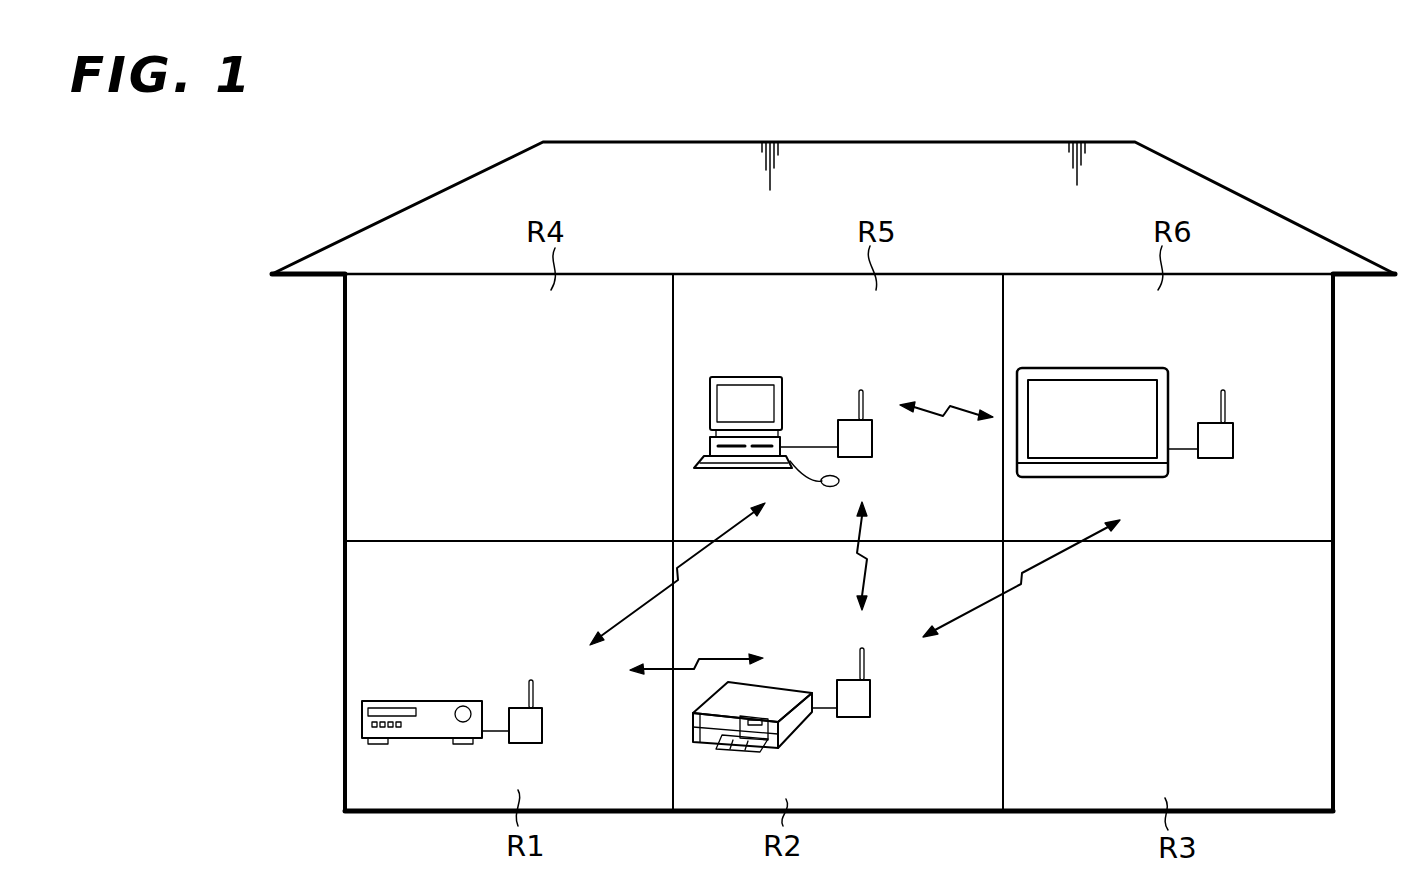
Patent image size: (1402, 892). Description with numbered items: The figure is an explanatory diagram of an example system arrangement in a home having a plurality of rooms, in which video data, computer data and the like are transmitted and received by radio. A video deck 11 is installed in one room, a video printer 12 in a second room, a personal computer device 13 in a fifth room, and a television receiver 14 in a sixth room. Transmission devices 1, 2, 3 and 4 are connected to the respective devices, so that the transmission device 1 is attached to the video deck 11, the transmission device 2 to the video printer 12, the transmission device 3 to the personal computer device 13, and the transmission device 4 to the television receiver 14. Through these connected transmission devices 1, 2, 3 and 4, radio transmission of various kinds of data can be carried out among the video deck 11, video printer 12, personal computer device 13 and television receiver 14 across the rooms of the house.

The transmission device 1 is at (542, 728).
The transmission device 2 is at (870, 700).
The transmission device 3 is at (872, 450).
The transmission device 4 is at (1233, 450).
The video deck 11 is at (433, 739).
The video printer 12 is at (800, 730).
The personal computer device 13 is at (760, 377).
The television receiver 14 is at (1145, 368).